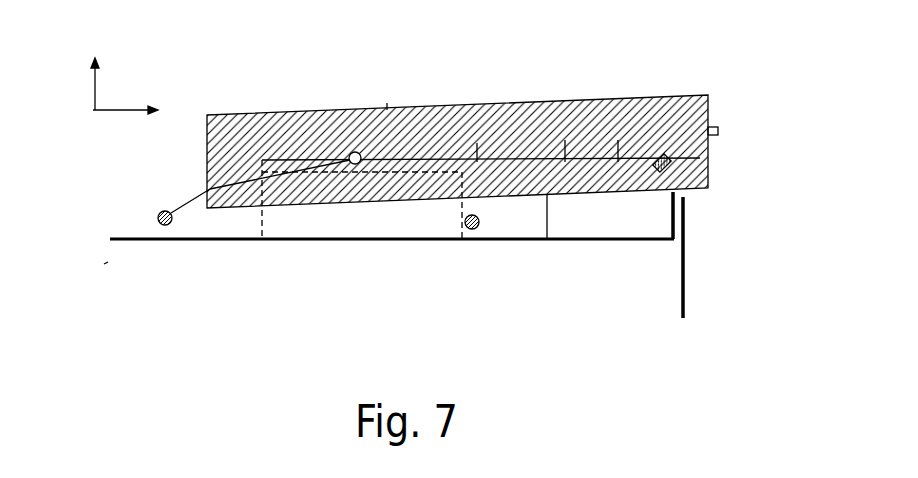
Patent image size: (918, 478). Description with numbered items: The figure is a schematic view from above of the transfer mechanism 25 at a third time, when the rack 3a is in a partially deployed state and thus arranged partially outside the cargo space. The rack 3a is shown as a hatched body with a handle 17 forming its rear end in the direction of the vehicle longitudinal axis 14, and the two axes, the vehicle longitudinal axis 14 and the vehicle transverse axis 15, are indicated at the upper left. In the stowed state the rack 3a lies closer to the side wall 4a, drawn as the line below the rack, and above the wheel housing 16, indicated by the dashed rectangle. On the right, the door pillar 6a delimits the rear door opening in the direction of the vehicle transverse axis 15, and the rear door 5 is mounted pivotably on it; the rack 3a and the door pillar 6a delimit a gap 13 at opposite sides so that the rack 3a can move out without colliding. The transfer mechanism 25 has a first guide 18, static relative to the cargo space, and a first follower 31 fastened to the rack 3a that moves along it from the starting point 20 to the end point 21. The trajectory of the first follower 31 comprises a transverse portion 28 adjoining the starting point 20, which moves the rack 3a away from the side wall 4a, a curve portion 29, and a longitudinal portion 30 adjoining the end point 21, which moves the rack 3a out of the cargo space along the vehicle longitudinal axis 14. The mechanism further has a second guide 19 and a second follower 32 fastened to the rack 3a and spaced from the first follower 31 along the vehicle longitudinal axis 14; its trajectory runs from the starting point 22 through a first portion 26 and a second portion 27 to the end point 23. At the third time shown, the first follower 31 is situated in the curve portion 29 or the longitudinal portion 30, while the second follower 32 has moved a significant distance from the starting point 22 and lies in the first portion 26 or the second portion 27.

The rack 3a is at (227, 115).
The second guide 19 is at (298, 113).
The second portion 27 is at (355, 152).
The end point of the second guide 23 is at (387, 103).
The curve portion 29 is at (493, 103).
The first guide 18 is at (606, 98).
The longitudinal portion 30 is at (667, 95).
The end point of the first guide 21 is at (668, 157).
The handle 17 is at (722, 131).
The gap 13 is at (684, 198).
The door pillar 6a is at (685, 215).
The rear door 5 is at (685, 262).
The side wall 4a is at (620, 240).
The first follower 31 is at (547, 240).
The transverse portion 28 is at (473, 197).
The starting point of the first guide 20 is at (474, 230).
The wheel housing 16 is at (262, 240).
The starting point of the second guide 22 is at (175, 226).
The transfer mechanism 25 is at (104, 264).
The first portion 26 is at (212, 187).
The second follower 32 is at (207, 176).
The vehicle transverse axis 15 is at (97, 76).
The vehicle longitudinal axis 14 is at (130, 110).